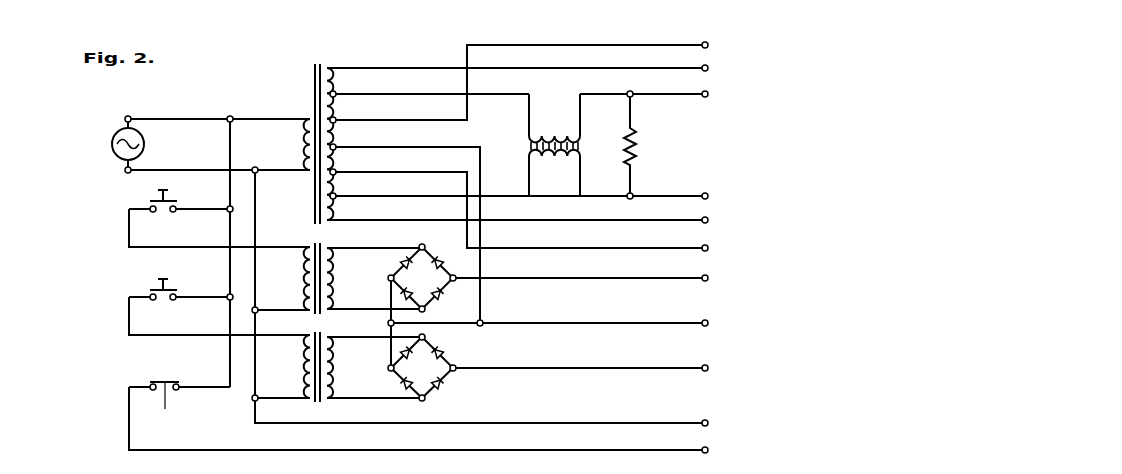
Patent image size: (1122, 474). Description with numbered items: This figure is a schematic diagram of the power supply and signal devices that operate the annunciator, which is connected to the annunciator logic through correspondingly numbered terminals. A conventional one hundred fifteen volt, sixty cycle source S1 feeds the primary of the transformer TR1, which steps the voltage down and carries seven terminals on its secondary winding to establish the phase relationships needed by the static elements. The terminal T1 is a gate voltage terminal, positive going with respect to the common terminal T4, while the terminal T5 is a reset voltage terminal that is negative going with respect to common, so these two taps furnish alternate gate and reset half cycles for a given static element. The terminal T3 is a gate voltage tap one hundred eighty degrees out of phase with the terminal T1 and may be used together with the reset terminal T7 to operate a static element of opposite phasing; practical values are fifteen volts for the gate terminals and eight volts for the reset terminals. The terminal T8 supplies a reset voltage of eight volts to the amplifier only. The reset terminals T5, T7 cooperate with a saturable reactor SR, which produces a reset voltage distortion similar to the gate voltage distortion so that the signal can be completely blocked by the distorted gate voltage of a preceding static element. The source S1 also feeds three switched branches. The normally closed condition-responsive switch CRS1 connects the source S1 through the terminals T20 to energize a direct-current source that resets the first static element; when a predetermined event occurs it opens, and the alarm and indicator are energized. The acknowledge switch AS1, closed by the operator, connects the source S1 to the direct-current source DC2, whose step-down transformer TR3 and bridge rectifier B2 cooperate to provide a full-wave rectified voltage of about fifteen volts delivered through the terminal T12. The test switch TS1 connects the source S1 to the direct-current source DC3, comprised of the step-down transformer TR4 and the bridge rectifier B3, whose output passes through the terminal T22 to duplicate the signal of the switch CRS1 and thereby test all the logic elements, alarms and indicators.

The source S1 is at (146, 144).
The acknowledge switch AS1 is at (168, 200).
The test switch TS1 is at (168, 289).
The condition-responsive switch CRS1 is at (161, 379).
The transformer TR1 is at (304, 111).
The step-down transformer TR3 is at (316, 278).
The step-down transformer TR4 is at (317, 367).
The direct-current source DC2 is at (332, 275).
The direct-current source DC3 is at (333, 368).
The bridge rectifier B2 is at (433, 285).
The bridge rectifier B3 is at (433, 375).
The saturable reactor SR is at (567, 127).
The terminal T8 is at (601, 45).
The gate voltage terminal T1 is at (667, 69).
The reset terminal T7 is at (684, 95).
The reset voltage terminal T5 is at (684, 196).
The gate voltage tap T3 is at (667, 221).
The terminal T12 is at (672, 279).
The common terminal T4 is at (667, 323).
The terminal T22 is at (672, 368).
The terminals T20 is at (708, 426).